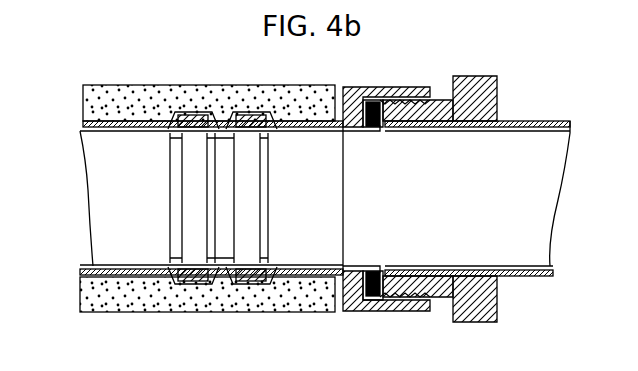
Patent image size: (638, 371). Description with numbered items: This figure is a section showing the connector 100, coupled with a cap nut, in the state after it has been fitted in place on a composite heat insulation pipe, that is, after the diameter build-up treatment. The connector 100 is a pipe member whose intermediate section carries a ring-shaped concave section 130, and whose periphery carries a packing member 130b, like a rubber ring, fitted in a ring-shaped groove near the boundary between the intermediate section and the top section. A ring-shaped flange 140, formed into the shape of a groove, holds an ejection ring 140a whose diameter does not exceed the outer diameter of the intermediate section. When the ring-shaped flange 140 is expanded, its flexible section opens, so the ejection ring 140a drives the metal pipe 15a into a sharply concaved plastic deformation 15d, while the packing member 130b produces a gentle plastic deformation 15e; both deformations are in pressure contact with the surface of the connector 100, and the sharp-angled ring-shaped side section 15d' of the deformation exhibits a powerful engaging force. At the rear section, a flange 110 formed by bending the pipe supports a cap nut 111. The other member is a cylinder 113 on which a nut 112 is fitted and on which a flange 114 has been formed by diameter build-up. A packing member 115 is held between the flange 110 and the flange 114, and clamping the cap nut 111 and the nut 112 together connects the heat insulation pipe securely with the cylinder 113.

The metal pipe 15a is at (92, 276).
The connector 100 is at (172, 212).
The ejection ring 140a is at (190, 112).
The packing member 130b is at (246, 114).
The ring-shaped flange 140 is at (185, 268).
The ring-shaped concave section 130 is at (262, 266).
The sharp-angled ring-shaped side section 15d' is at (195, 238).
The sharply concaved plastic deformation 15d is at (204, 308).
The gentle plastic deformation 15e is at (270, 274).
The flange 110 is at (350, 87).
The cap nut 111 is at (400, 97).
The nut 112 is at (468, 80).
The cylinder 113 is at (514, 121).
The flange 114 is at (398, 126).
The packing member 115 is at (376, 130).